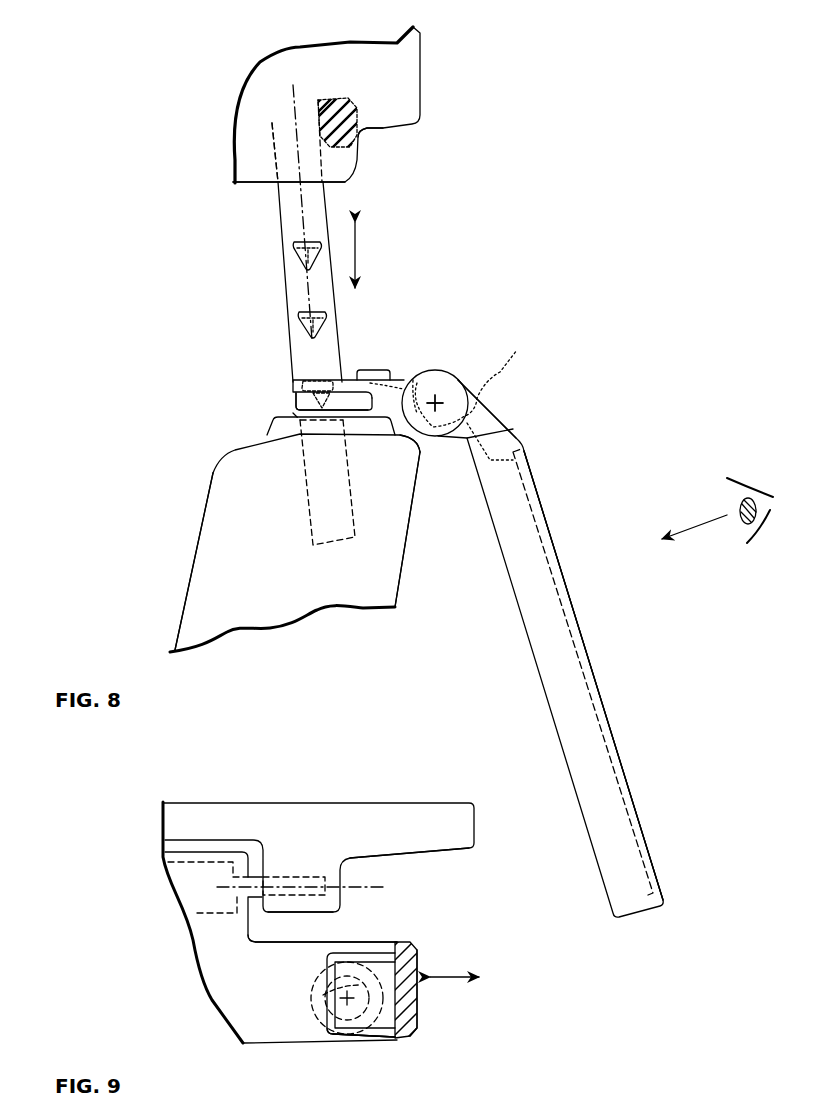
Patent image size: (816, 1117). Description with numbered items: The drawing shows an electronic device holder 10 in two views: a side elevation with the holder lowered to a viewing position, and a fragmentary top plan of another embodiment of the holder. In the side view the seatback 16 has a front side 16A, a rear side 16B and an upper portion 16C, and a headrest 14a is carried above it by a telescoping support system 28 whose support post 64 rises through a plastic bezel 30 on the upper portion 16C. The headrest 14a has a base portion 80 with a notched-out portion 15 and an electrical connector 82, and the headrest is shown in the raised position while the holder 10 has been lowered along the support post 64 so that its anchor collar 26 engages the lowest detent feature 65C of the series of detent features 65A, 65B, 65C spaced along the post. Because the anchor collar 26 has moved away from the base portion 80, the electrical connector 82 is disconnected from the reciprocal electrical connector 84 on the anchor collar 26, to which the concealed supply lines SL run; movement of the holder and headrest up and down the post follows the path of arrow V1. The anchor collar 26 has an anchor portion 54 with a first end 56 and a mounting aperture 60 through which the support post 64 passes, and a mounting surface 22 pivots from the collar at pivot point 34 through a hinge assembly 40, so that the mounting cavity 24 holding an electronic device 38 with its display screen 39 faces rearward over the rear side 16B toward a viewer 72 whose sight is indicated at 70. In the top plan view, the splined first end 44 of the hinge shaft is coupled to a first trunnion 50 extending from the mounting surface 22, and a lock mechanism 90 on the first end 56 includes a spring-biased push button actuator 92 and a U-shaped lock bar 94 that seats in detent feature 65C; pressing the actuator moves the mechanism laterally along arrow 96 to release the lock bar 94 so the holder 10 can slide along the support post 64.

In FIG. 8, the electronic device holder 10 is at (552, 402).
In FIG. 9, the electronic device holder 10 is at (488, 862).
In FIG. 8, the headrest 14a is at (422, 65).
In FIG. 8, the notched-out portion 15 is at (384, 130).
In FIG. 8, the seatback 16 is at (227, 592).
In FIG. 8, the front side 16A is at (190, 577).
In FIG. 8, the rear side 16B is at (410, 545).
In FIG. 8, the upper portion 16C is at (427, 443).
In FIG. 8, the mounting surface 22 is at (660, 835).
In FIG. 9, the mounting surface 22 is at (445, 822).
In FIG. 8, the mounting cavity 24 is at (623, 803).
In FIG. 8, the anchor collar 26 is at (293, 388).
In FIG. 9, the anchor collar 26 is at (267, 1027).
In FIG. 8, the telescoping support system 28 is at (272, 123).
In FIG. 8, the plastic bezel 30 is at (270, 427).
In FIG. 8, the pivot point 34 is at (440, 400).
In FIG. 9, the pivot point 34 is at (313, 887).
In FIG. 8, the electronic device 38 is at (620, 739).
In FIG. 8, the display screen 39 is at (600, 693).
In FIG. 9, the hinge assembly 40 is at (207, 920).
In FIG. 9, the first end 44 is at (290, 877).
In FIG. 8, the first trunnion 50 is at (430, 387).
In FIG. 9, the first trunnion 50 is at (317, 912).
In FIG. 8, the anchor portion 54 is at (293, 403).
In FIG. 9, the anchor portion 54 is at (222, 979).
In FIG. 8, the first end 56 is at (332, 401).
In FIG. 9, the first end 56 is at (347, 1043).
In FIG. 8, the mounting aperture 60 is at (293, 413).
In FIG. 9, the mounting aperture 60 is at (313, 1017).
In FIG. 8, the support post 64 is at (323, 200).
In FIG. 9, the support post 64 is at (358, 982).
In FIG. 8, the detent feature 65A is at (297, 253).
In FIG. 8, the detent feature 65B is at (303, 323).
In FIG. 8, the detent feature 65C is at (303, 370).
In FIG. 9, the detent feature 65C is at (323, 995).
In FIG. 8, the viewing direction 70 is at (700, 523).
In FIG. 8, the viewer 72 is at (750, 480).
In FIG. 8, the base portion 80 is at (252, 184).
In FIG. 8, the electrical connector 82 is at (332, 100).
In FIG. 8, the electrical connector 84 is at (370, 372).
In FIG. 9, the lock mechanism 90 is at (426, 1010).
In FIG. 9, the push button actuator 92 is at (413, 1033).
In FIG. 9, the U-shaped lock bar 94 is at (383, 1040).
In FIG. 9, the arrow 96 is at (450, 977).
In FIG. 8, the arrow V1 is at (357, 257).
In FIG. 8, the supply lines SL is at (471, 390).